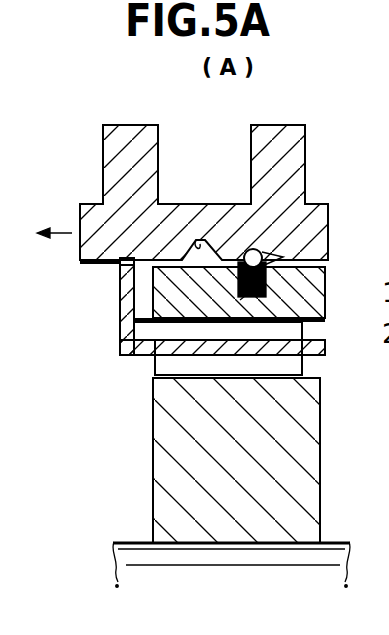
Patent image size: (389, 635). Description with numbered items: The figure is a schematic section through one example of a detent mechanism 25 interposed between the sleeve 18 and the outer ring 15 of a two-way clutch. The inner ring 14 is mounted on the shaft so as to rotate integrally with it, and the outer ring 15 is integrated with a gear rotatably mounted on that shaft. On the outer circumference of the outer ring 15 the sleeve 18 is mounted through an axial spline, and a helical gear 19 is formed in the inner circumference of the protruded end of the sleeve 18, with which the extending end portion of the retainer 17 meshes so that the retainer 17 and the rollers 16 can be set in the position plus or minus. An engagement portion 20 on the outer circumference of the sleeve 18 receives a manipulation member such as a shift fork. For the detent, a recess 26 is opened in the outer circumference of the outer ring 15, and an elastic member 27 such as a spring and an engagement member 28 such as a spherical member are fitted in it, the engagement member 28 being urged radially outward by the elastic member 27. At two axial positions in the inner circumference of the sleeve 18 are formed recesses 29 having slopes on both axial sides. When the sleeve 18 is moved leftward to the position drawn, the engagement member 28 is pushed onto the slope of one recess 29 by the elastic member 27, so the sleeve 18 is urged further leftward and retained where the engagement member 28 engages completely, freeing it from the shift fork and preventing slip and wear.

The inner ring 14 is at (156, 478).
The outer ring 15 is at (322, 305).
The rollers 16 is at (155, 369).
The retainer 17 is at (121, 318).
The sleeve 18 is at (88, 204).
The helical gear 19 is at (81, 265).
The engagement portion 20 is at (251, 152).
The detent mechanism 25 is at (233, 296).
The recess 26 is at (325, 349).
The elastic member 27 is at (245, 297).
The engagement member 28 is at (262, 250).
The recesses 29 is at (197, 240).